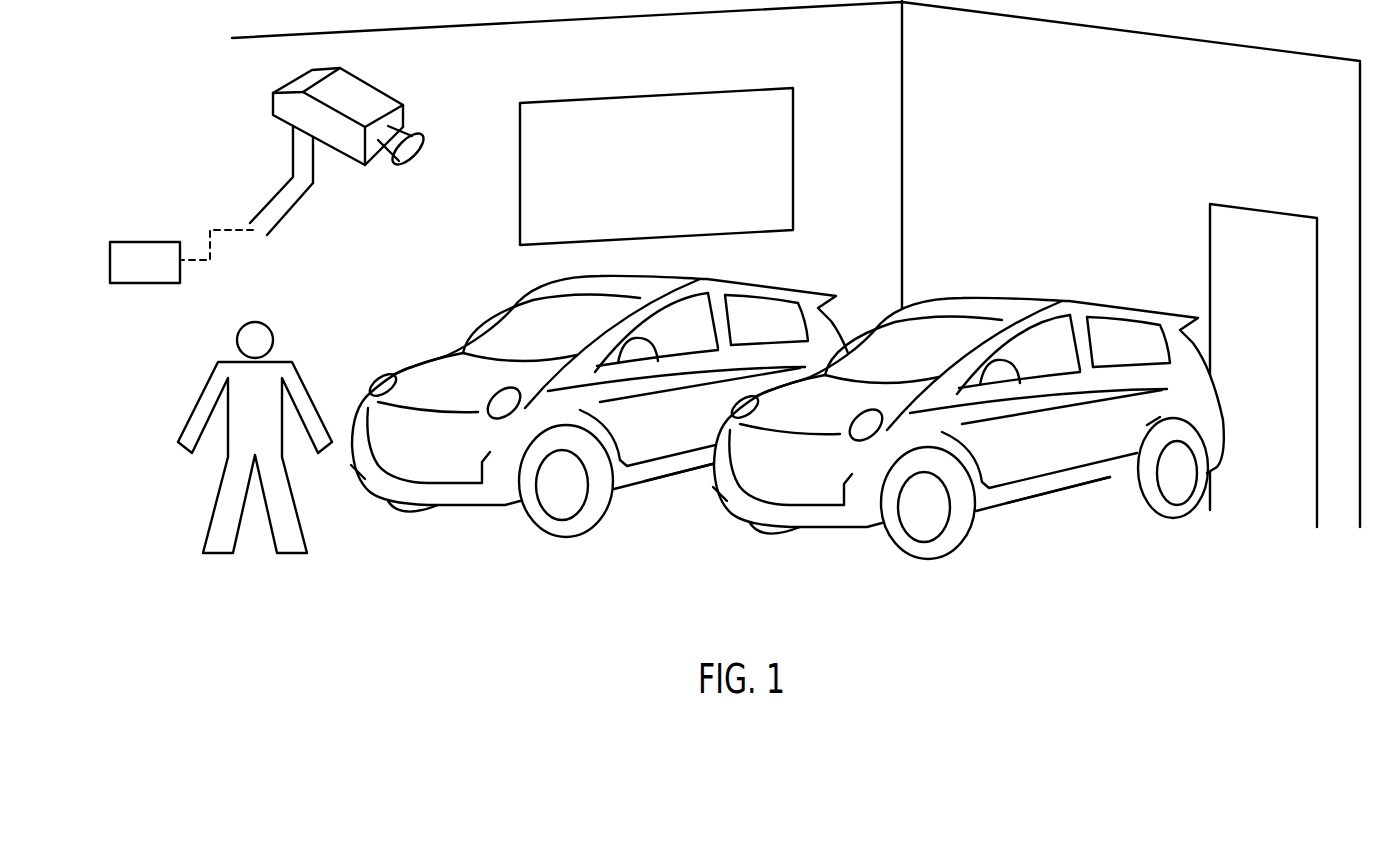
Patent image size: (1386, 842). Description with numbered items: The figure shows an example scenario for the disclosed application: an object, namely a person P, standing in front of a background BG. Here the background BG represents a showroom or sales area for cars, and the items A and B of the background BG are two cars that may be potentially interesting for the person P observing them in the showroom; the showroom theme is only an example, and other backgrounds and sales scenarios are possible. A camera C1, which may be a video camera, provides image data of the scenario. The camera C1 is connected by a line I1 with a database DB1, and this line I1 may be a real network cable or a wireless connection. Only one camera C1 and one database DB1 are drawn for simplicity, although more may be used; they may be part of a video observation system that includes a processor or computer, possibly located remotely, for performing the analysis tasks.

The background BG is at (796, 264).
The camera C1 is at (339, 142).
The database DB1 is at (147, 240).
The line I1 is at (217, 252).
The person P is at (255, 437).
The item / car B is at (606, 406).
The item / car A is at (968, 433).